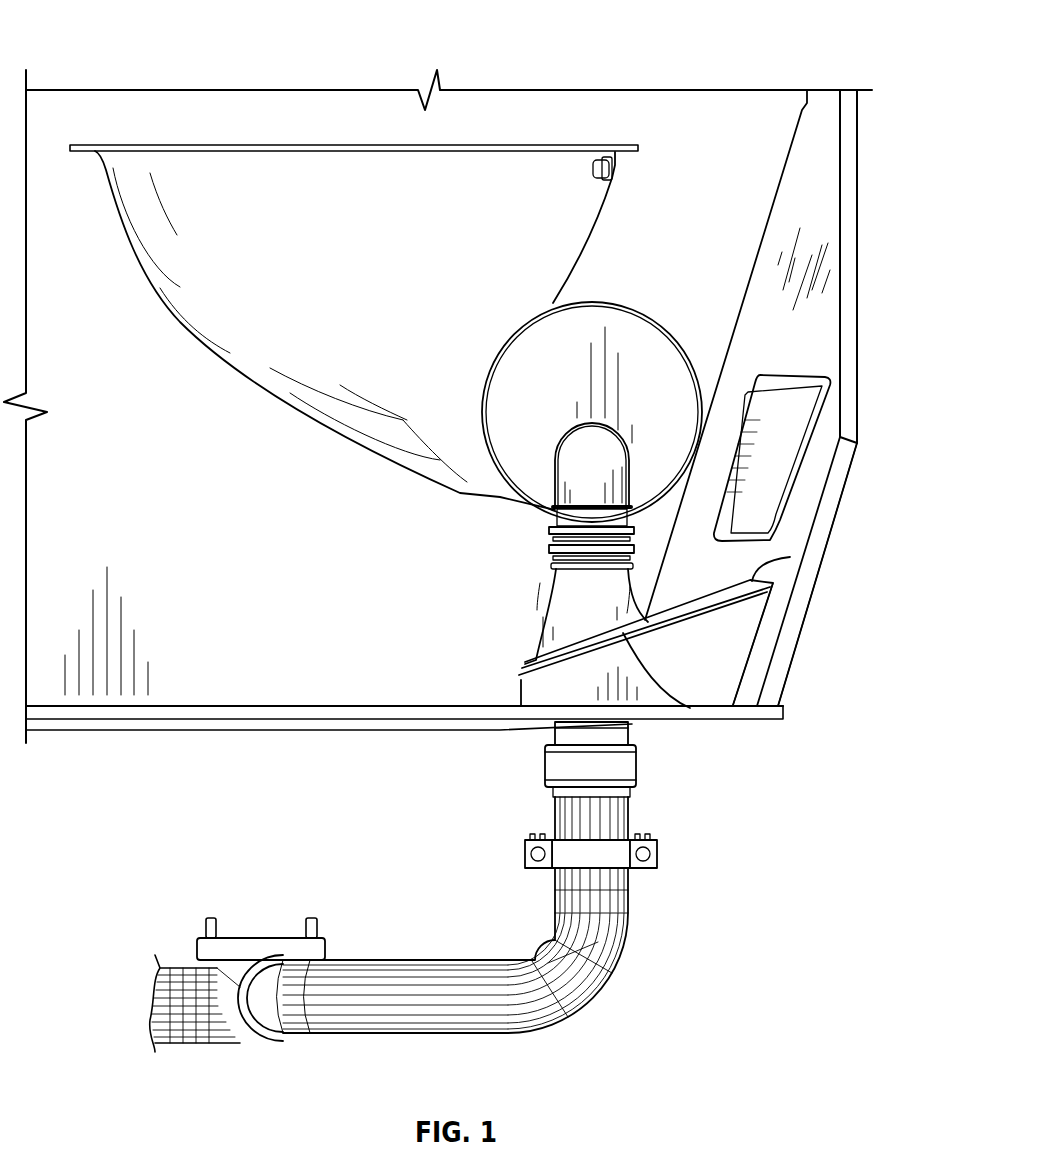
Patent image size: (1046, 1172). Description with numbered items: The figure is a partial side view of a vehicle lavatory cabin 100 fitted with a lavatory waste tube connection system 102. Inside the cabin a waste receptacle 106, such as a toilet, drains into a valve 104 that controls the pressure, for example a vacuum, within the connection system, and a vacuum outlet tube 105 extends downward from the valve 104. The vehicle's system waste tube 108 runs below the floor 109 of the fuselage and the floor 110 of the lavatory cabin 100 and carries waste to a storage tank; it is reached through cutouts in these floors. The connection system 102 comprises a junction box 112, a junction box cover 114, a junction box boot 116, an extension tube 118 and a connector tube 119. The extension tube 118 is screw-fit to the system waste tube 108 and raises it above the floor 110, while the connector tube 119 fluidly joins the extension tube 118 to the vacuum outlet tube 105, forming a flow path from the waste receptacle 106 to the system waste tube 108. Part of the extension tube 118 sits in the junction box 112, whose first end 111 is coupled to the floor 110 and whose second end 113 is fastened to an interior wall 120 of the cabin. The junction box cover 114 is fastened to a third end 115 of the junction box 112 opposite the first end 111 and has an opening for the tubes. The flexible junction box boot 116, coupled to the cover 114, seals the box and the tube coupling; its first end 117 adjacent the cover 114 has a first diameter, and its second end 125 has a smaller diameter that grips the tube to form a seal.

The vehicle lavatory cabin 100 is at (148, 62).
The lavatory waste tube connection system 102 is at (516, 736).
The valve 104 is at (530, 355).
The vacuum outlet tube 105 is at (590, 490).
The waste receptacle 106 is at (160, 288).
The system waste tube 108 is at (623, 934).
The floor 109 is at (148, 727).
The floor 110 is at (167, 713).
The first end 111 is at (707, 713).
The junction box 112 is at (767, 629).
The second end 113 is at (780, 687).
The junction box cover 114 is at (790, 557).
The third end 115 is at (745, 685).
The junction box boot 116 is at (528, 622).
The first end 117 is at (663, 690).
The extension tube 118 is at (632, 735).
The connector tube 119 is at (630, 567).
The wall 120 is at (760, 352).
The second end 125 is at (625, 572).